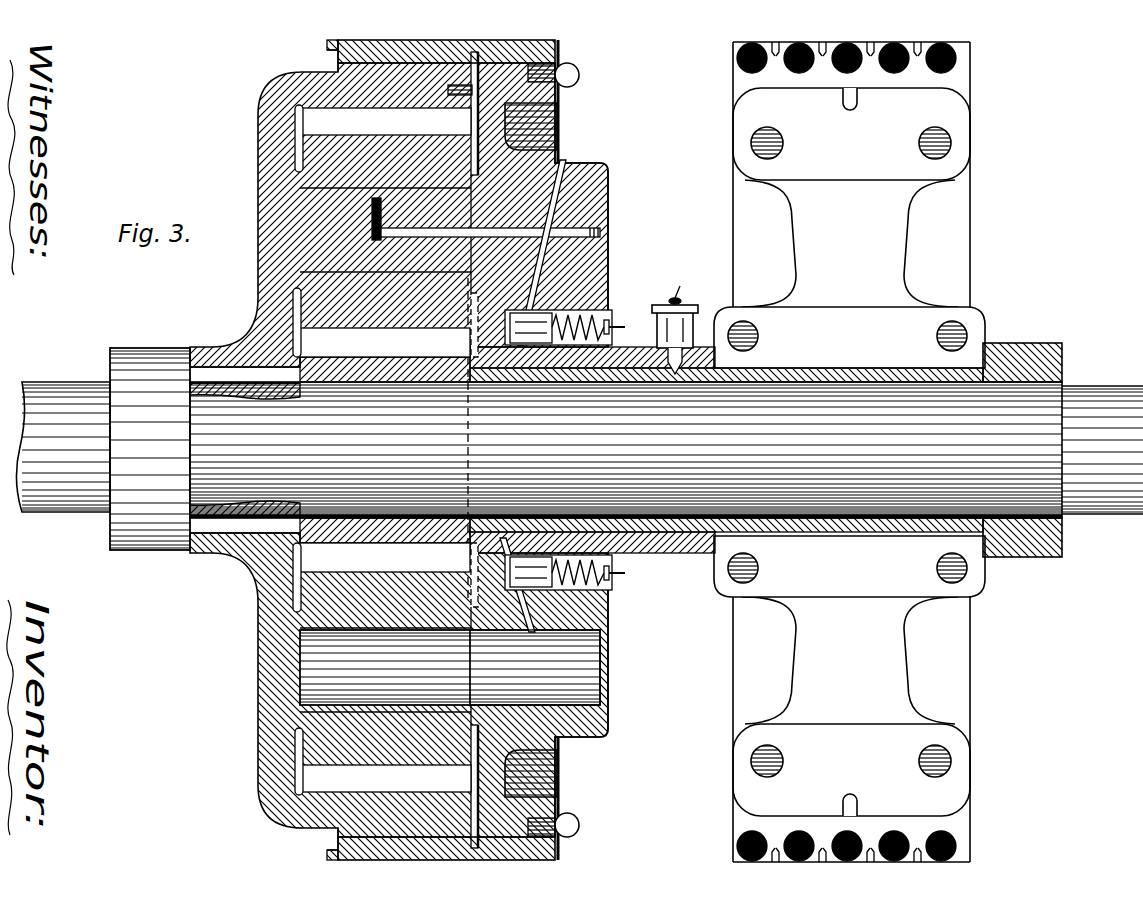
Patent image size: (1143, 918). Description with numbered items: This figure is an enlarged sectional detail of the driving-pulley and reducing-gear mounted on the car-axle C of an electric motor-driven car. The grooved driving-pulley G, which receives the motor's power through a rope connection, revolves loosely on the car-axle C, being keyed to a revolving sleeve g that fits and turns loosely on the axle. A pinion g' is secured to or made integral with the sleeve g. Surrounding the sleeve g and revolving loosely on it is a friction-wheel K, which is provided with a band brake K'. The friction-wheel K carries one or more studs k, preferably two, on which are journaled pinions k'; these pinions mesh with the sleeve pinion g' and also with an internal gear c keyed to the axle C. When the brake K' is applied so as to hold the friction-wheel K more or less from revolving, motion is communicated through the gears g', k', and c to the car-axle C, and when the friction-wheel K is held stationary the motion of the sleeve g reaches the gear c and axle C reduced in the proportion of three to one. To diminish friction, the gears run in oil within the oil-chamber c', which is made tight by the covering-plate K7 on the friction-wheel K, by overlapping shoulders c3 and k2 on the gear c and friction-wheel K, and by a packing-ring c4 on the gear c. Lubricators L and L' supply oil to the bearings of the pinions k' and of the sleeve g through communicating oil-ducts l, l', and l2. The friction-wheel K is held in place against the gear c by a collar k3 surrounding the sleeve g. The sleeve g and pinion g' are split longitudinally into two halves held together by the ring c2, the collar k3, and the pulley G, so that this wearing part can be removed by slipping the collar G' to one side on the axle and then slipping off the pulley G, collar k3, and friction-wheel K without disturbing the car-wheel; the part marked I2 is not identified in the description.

The car-axle C is at (579, 439).
The driving-pulley G is at (849, 452).
The collar G' is at (1022, 431).
The revolving sleeve g is at (726, 469).
The pinion g' is at (385, 450).
The internal gear c is at (399, 450).
The oil-chamber c' is at (259, 450).
The ring c2 is at (302, 362).
The shoulder c3 is at (330, 62).
The packing-ring c4 is at (470, 120).
The stud k is at (465, 395).
The pinion k' is at (385, 450).
The shoulder k2 is at (335, 45).
The collar k3 is at (680, 550).
The friction-wheel K is at (600, 450).
The brake K' is at (571, 447).
The covering-plate K7 is at (561, 147).
The oil-duct l is at (575, 252).
The oil-duct l' is at (535, 621).
The oil-duct l2 is at (662, 370).
The lubricator L is at (566, 318).
The lubricator L' is at (569, 586).
The oil cup I2 is at (675, 319).